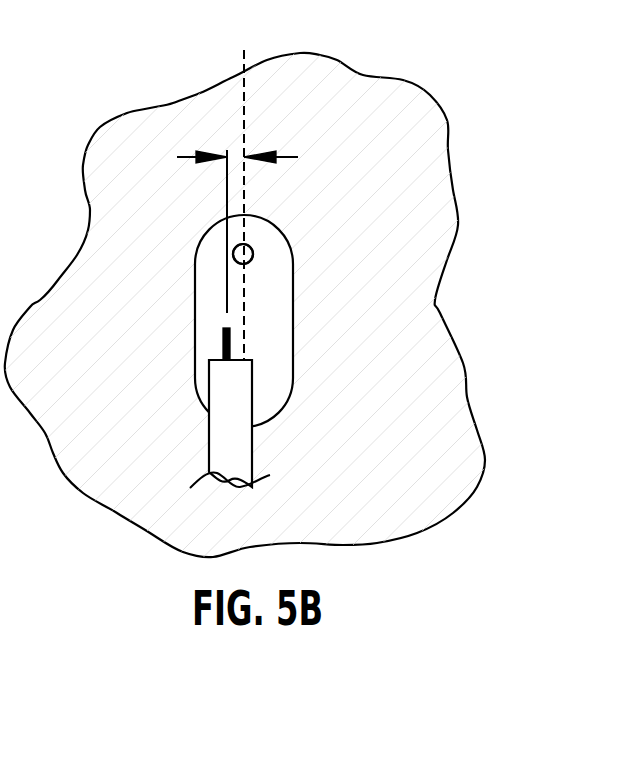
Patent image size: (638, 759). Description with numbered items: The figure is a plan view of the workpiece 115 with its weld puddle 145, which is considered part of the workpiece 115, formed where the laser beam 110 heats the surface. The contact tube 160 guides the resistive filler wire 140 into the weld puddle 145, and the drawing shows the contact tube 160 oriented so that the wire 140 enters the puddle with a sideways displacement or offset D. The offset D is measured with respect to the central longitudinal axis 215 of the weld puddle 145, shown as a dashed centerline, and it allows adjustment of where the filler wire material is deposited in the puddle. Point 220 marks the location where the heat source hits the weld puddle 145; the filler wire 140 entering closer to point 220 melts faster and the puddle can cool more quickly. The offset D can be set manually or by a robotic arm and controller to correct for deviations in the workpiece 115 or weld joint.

The workpiece 115 is at (403, 173).
The weld puddle 145 is at (293, 355).
The contact tube 160 is at (252, 453).
The filler wire 140 is at (223, 333).
The laser beam 110 is at (245, 256).
The point where the heat source hits the weld puddle 220 is at (244, 253).
The central longitudinal axis of the weld puddle 215 is at (245, 122).
The offset D is at (296, 157).